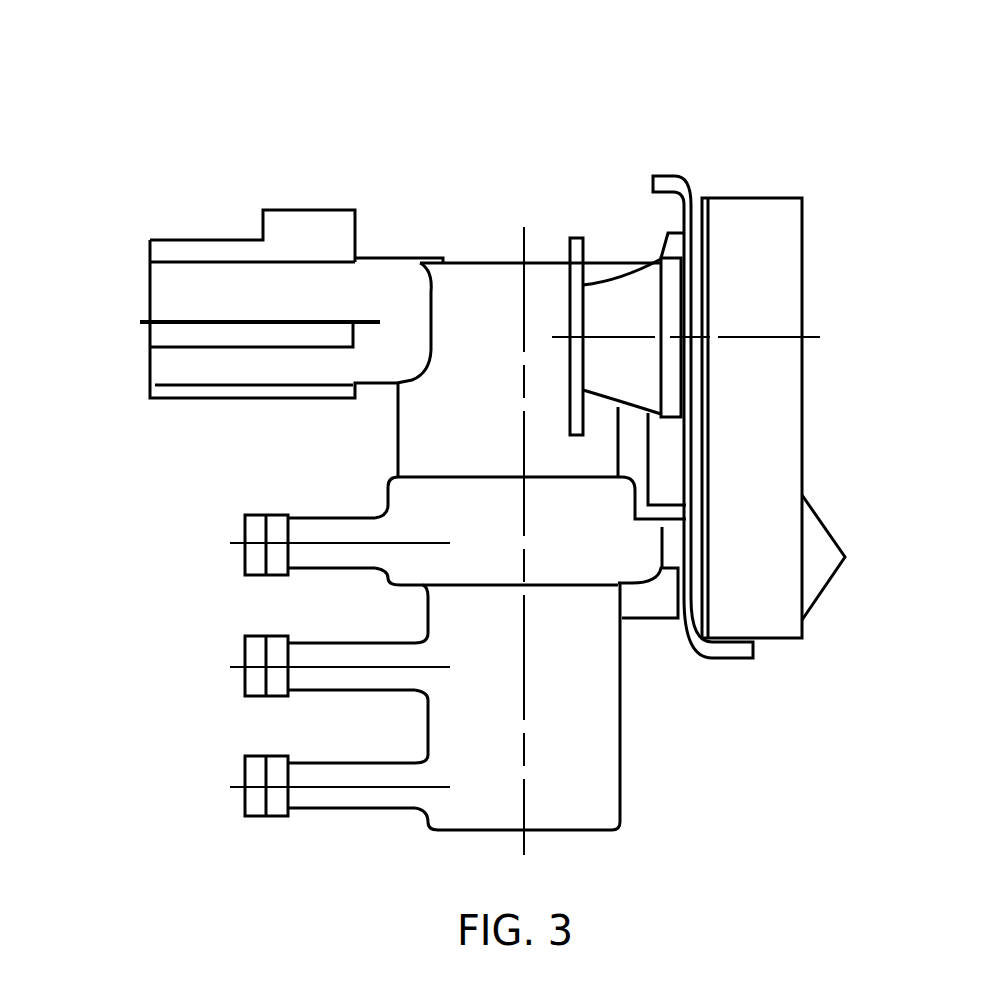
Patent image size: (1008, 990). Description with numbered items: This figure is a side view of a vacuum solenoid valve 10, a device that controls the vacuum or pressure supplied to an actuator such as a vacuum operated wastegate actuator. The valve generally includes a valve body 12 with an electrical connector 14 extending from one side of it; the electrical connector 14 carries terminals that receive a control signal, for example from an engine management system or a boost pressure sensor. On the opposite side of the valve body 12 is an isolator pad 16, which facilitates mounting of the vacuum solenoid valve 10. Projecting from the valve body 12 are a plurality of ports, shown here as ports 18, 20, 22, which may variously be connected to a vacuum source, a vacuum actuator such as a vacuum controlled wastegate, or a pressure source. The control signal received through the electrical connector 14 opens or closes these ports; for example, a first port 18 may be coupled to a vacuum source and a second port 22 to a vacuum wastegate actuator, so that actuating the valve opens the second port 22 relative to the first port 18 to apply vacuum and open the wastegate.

The vacuum solenoid valve 10 is at (244, 100).
The valve body 12 is at (612, 712).
The electrical connector 14 is at (147, 290).
The isolator pad 16 is at (803, 272).
The first port 18 is at (305, 517).
The port 20 is at (323, 638).
The second port 22 is at (327, 758).